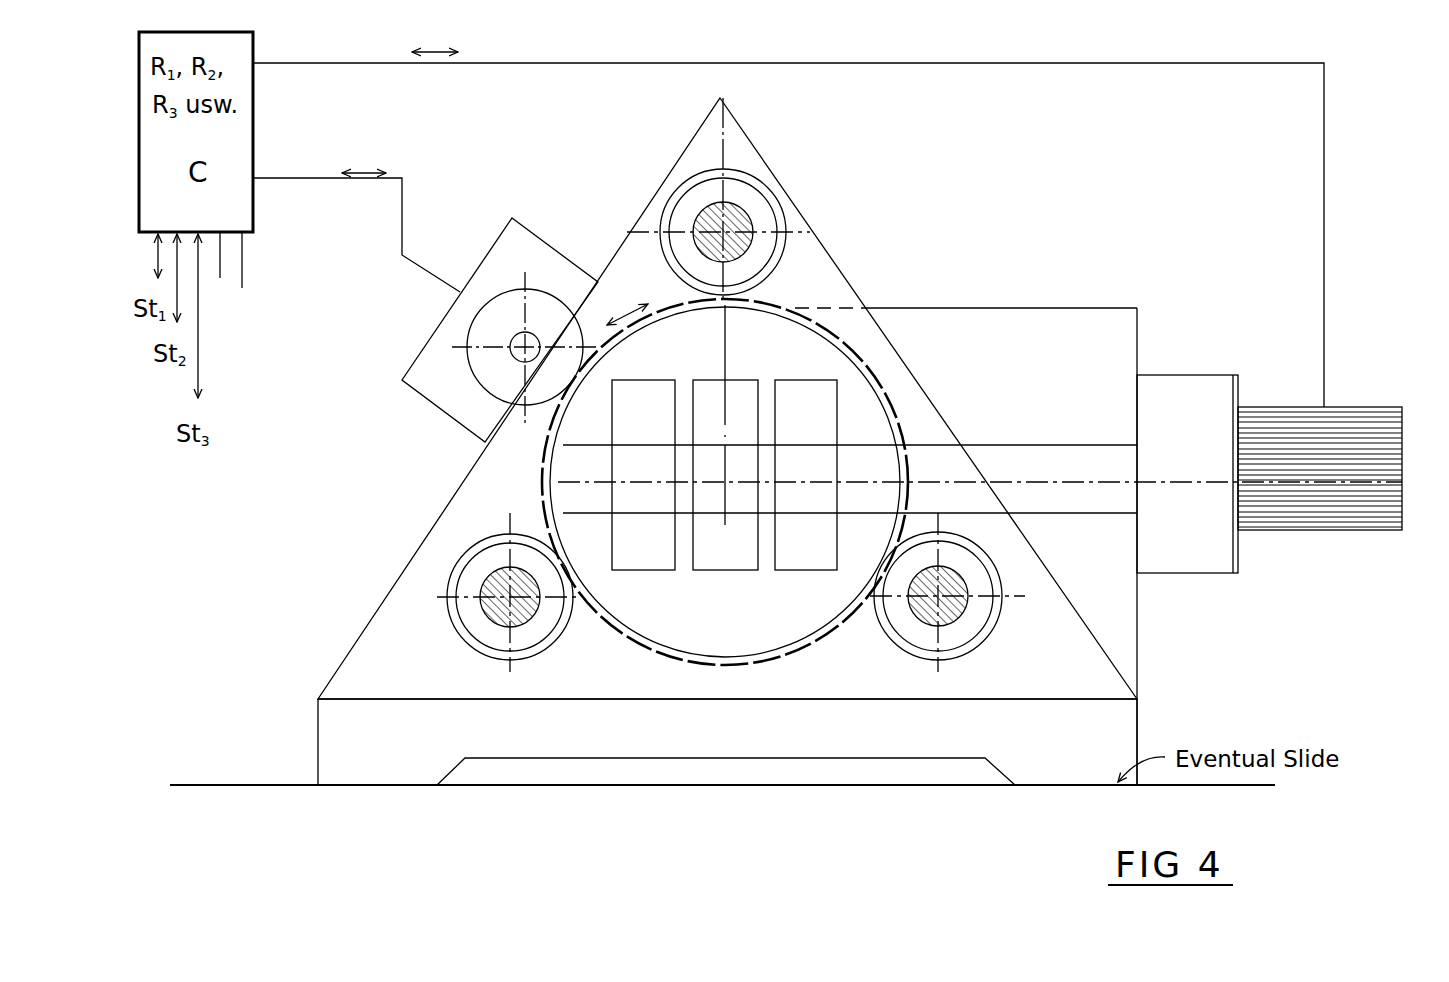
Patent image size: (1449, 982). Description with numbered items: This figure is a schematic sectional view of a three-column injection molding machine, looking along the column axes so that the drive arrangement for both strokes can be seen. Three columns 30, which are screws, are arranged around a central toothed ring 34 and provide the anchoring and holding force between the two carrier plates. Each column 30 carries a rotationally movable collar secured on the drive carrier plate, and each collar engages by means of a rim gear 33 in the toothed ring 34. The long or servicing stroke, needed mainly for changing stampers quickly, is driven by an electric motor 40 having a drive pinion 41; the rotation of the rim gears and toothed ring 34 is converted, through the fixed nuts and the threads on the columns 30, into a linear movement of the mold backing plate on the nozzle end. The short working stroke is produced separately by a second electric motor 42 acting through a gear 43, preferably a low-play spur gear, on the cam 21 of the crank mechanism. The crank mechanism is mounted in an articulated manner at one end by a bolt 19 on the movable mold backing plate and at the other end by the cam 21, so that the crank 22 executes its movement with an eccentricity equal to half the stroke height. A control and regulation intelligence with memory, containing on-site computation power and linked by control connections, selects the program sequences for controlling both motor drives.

The bolt 19 is at (1025, 447).
The cam 21 is at (717, 371).
The crank 22 is at (662, 563).
The column 30 is at (753, 217).
The rim gear 33 is at (755, 198).
The toothed ring 34 is at (813, 647).
The electric motor 40 is at (565, 272).
The drive pinion 41 is at (488, 370).
The electric motor 42 is at (1307, 536).
The gear 43 is at (1180, 565).